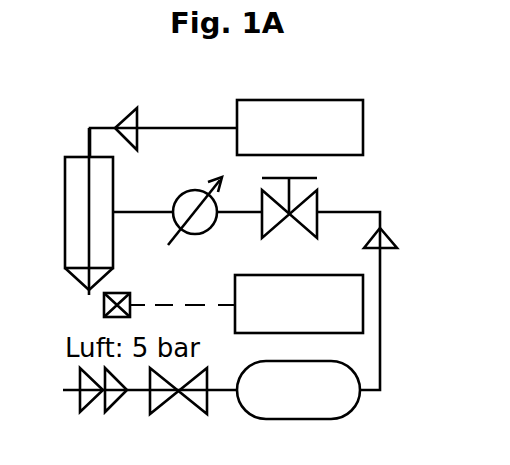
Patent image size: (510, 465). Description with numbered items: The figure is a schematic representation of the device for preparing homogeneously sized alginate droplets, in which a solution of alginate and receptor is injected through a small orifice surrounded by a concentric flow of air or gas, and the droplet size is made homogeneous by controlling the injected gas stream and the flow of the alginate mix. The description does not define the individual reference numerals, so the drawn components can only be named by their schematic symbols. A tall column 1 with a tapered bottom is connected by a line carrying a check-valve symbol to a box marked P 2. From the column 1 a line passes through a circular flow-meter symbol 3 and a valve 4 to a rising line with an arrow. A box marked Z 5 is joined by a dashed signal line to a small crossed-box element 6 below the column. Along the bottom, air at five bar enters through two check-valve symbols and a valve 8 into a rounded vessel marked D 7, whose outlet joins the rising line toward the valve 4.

The measuring cylinder / column 1 is at (65, 206).
The pump P 2 is at (284, 100).
The flow meter 3 is at (180, 200).
The control valve 4 is at (328, 196).
The controller Z 5 is at (236, 275).
The sensor 6 is at (119, 292).
The pressure vessel D 7 is at (344, 419).
The valve 8 is at (153, 411).